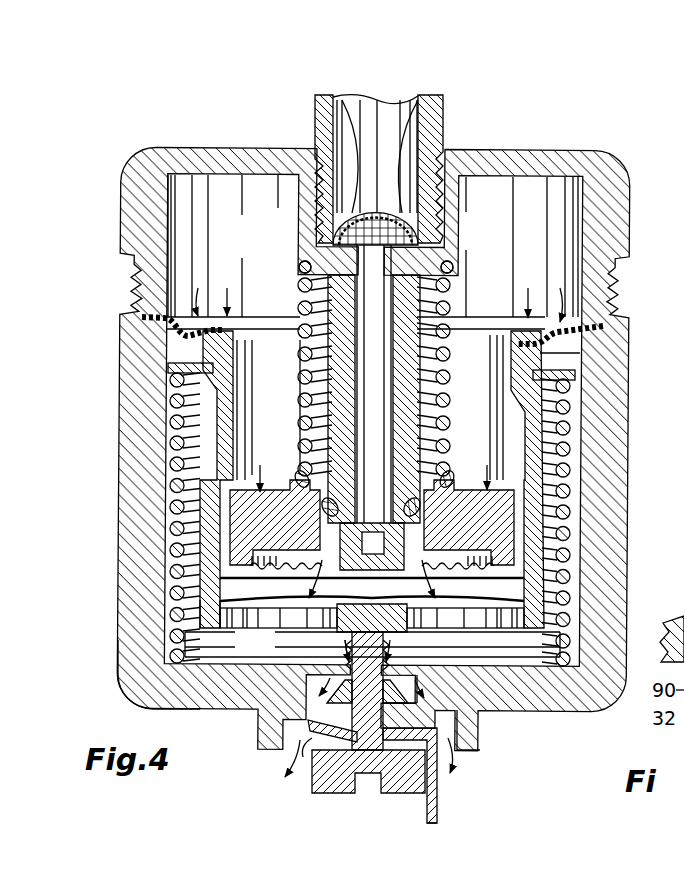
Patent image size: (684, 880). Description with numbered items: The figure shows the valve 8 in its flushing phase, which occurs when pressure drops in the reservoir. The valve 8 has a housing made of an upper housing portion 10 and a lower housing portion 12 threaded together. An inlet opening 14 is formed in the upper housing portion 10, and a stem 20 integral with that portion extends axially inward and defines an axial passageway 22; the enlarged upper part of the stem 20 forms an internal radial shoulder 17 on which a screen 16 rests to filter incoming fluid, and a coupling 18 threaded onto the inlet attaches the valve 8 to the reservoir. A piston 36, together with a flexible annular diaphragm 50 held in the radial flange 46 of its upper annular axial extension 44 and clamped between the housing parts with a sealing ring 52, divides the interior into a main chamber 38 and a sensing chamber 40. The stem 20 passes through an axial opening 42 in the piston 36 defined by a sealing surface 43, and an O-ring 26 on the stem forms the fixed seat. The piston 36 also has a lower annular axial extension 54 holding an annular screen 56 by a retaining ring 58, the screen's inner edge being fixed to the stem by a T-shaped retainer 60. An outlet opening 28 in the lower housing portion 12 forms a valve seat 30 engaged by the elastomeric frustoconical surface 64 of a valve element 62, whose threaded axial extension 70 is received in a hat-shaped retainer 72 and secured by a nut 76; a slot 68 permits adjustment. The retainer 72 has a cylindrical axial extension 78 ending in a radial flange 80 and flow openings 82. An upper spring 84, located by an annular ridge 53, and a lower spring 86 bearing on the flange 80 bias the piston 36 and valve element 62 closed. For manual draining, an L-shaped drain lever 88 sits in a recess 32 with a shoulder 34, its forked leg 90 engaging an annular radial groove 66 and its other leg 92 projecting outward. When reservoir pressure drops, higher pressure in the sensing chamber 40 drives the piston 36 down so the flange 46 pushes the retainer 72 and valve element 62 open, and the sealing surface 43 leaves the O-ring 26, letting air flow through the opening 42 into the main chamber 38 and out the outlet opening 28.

The valve 8 is at (218, 108).
The upper housing portion 10 is at (128, 166).
The lower housing portion 12 is at (130, 695).
The inlet opening 14 is at (420, 100).
The screen 16 is at (388, 100).
The internal radial shoulder 17 is at (347, 100).
The coupling 18 is at (313, 117).
The stem 20 is at (422, 370).
The axial passageway 22 is at (390, 315).
The O-ring 26 is at (383, 522).
The outlet opening 28 is at (465, 660).
The valve seat 30 is at (448, 668).
The recess 32 is at (280, 778).
The shoulder 34 is at (455, 777).
The piston 36 is at (473, 493).
The main chamber 38 is at (372, 647).
The sensing chamber 40 is at (250, 252).
The axial opening 42 is at (322, 516).
The sealing surface 43 is at (478, 512).
The upper annular axial extension 44 is at (518, 433).
The radial flange 46 is at (540, 360).
The flexible annular diaphragm 50 is at (570, 324).
The sealing ring 52 is at (140, 318).
The annular ridge 53 is at (265, 486).
The lower annular axial extension 54 is at (507, 567).
The annular screen 56 is at (233, 566).
The retaining ring 58 is at (225, 582).
The T-shaped retainer 60 is at (372, 546).
The valve element 62 is at (400, 793).
The elastomeric frustoconical surface 64 is at (256, 711).
The annular radial groove 66 is at (303, 757).
The slot 68 is at (367, 780).
The threaded axial extension 70 is at (488, 652).
The hat-shaped retainer 72 is at (527, 620).
The nut 76 is at (213, 603).
The cylindrical axial extension 78 is at (200, 437).
The radial flange 80 is at (183, 362).
The flow openings 82 is at (517, 605).
The upper spring 84 is at (453, 280).
The lower spring 86 is at (568, 443).
The drain lever 88 is at (441, 821).
The forked leg 90 is at (300, 730).
The leg 92 is at (444, 808).